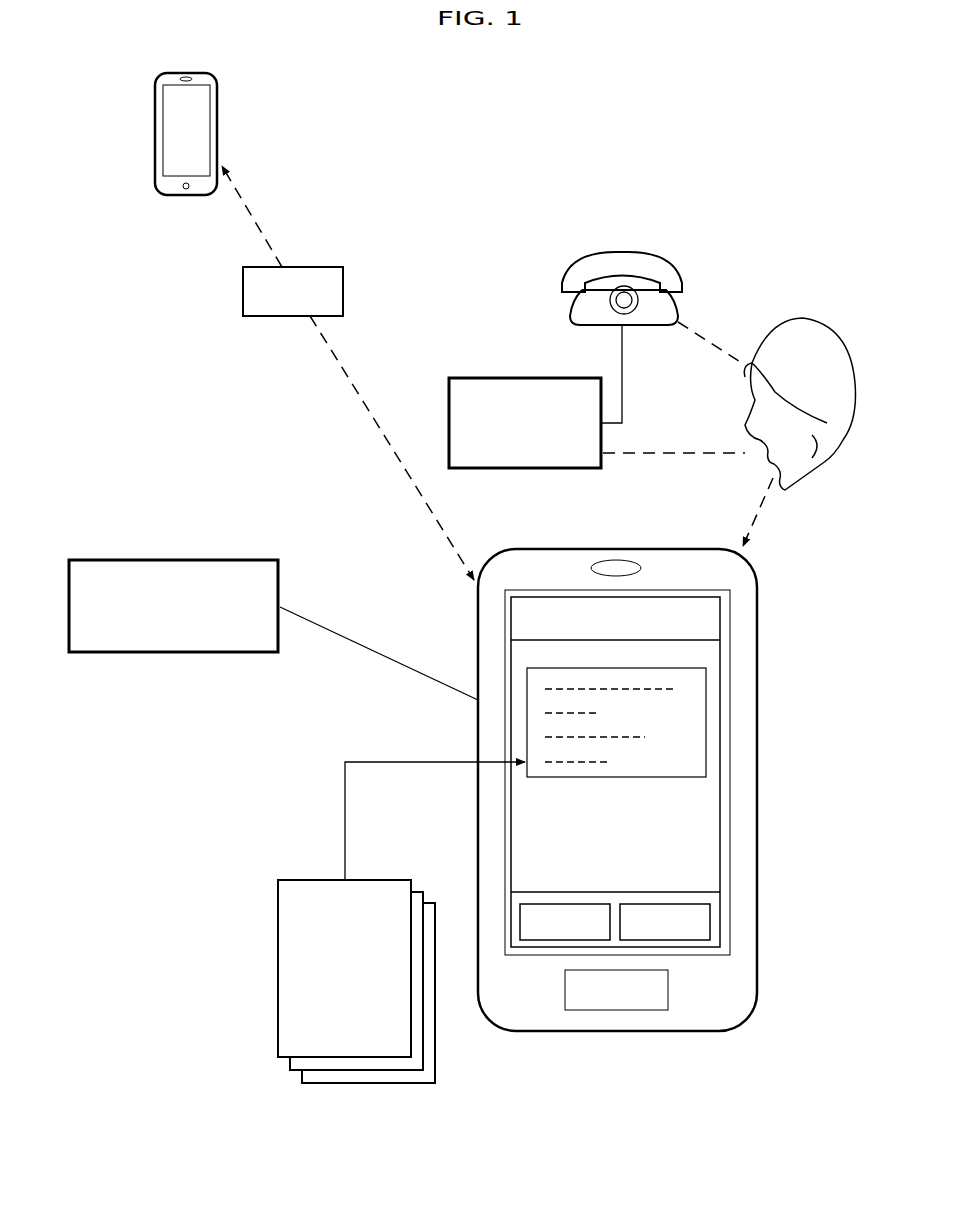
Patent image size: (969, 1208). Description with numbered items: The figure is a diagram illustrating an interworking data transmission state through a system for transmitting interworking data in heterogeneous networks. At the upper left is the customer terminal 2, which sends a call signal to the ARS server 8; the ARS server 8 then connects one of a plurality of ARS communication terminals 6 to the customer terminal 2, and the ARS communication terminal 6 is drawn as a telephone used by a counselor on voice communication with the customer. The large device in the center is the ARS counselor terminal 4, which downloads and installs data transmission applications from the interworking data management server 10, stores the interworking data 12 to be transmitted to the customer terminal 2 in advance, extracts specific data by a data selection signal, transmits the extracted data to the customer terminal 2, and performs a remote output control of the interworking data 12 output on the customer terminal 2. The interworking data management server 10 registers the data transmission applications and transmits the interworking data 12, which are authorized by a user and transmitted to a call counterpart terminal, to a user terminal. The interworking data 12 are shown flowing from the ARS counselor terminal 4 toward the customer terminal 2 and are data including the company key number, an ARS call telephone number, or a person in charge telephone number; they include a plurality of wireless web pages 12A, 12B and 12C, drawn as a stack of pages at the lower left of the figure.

The customer terminal 2 is at (218, 88).
The ARS counselor terminal 4 is at (760, 608).
The ARS communication terminal 6 is at (660, 260).
The ARS server 8 is at (472, 378).
The interworking data management server 10 is at (183, 560).
The interworking data 12 is at (317, 267).
The wireless web page 12A is at (278, 1033).
The wireless web page 12B is at (290, 1065).
The wireless web page 12C is at (302, 1082).